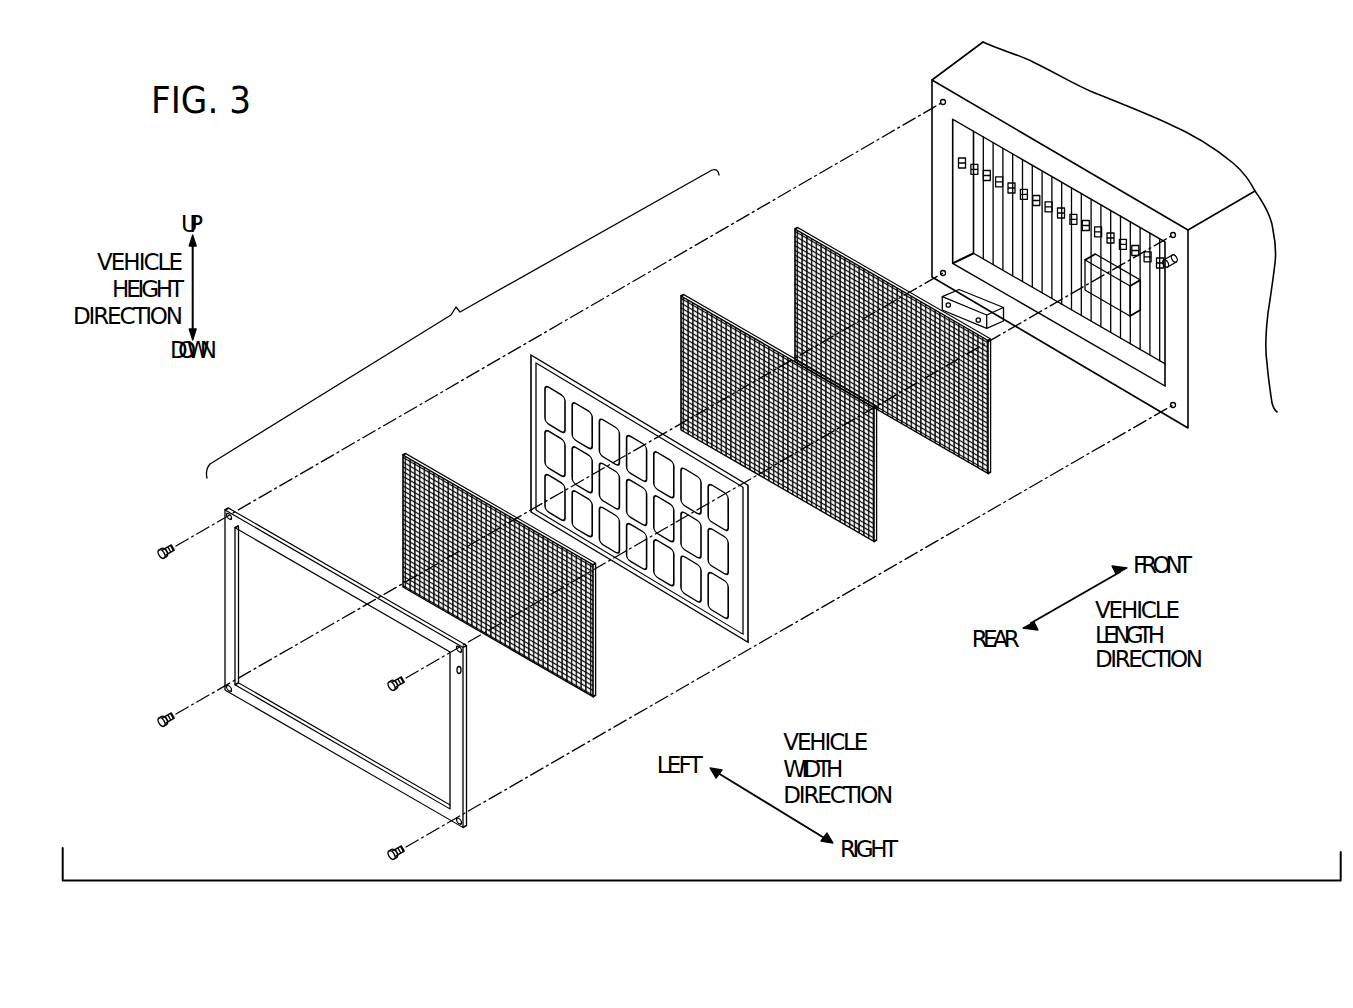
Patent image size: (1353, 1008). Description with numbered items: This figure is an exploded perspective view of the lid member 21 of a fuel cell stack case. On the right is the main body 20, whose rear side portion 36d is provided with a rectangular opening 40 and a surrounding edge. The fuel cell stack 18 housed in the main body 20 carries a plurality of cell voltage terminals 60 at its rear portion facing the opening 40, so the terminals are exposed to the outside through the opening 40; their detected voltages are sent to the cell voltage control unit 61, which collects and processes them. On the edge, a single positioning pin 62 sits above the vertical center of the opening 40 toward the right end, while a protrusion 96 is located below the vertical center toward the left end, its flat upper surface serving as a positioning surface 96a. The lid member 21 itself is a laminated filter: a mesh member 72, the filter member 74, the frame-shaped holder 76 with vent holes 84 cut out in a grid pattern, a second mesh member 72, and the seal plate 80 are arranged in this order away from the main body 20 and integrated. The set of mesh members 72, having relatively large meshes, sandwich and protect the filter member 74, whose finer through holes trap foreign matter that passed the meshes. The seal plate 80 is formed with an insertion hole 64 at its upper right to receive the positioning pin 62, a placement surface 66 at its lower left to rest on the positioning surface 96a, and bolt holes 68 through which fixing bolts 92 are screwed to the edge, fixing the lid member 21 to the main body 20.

The main body 20 is at (1108, 251).
The rear side portion 36d is at (988, 125).
The opening 40 is at (1033, 172).
The fuel cell stack 18 is at (1071, 249).
The cell voltage terminals 60 is at (1147, 255).
The cell voltage control unit 61 is at (1136, 294).
The positioning pin 62 is at (1179, 261).
The protrusion 96 is at (937, 269).
The positioning surface 96a is at (958, 291).
The mesh members 72 is at (597, 676).
The filter member 74 is at (877, 516).
The frame-shaped holder 76 is at (639, 491).
The vent holes 84 is at (578, 414).
The seal plate 80 is at (345, 668).
The placement surface 66 is at (234, 692).
The bolt holes 68 is at (226, 514).
The insertion hole 64 is at (462, 673).
The fixing bolts 92 is at (158, 554).
The lid member 21 is at (462, 324).